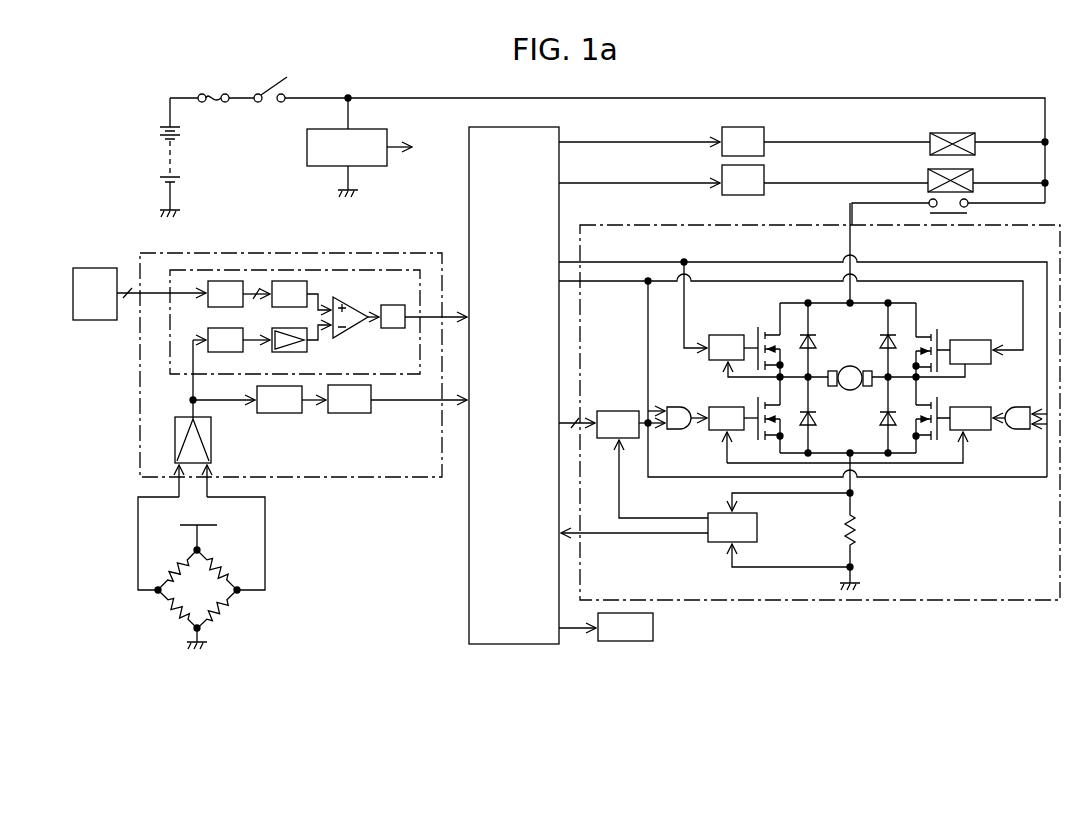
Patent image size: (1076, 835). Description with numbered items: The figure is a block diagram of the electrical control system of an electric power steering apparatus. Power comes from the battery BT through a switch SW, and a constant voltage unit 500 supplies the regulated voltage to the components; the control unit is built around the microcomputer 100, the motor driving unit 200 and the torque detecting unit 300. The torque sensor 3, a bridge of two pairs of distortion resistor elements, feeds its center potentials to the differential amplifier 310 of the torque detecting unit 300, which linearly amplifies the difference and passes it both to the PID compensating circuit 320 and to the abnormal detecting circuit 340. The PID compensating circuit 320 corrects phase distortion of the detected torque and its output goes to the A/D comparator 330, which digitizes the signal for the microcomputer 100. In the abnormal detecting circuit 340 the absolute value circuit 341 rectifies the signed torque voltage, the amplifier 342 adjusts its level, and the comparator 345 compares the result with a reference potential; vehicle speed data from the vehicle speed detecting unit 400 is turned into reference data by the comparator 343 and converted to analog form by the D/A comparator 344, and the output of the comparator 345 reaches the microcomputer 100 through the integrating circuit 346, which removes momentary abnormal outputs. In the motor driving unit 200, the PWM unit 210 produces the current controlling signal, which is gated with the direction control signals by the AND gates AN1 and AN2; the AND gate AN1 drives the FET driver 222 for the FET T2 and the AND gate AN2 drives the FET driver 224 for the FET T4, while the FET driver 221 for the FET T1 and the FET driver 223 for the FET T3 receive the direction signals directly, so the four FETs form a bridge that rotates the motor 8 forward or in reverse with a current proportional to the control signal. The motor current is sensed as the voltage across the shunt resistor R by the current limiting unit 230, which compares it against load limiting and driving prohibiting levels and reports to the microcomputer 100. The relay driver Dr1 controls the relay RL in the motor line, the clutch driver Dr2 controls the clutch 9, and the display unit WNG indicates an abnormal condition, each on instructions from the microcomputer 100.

The microcomputer (CPU) 100 is at (469, 546).
The motor driving unit 200 is at (811, 601).
The torque detecting unit 300 is at (346, 253).
The constant voltage unit / vehicle speed detecting unit 400 is at (79, 270).
The power supply circuit 500 is at (306, 147).
The torque sensor 3 is at (208, 598).
The motor 8 is at (849, 365).
The clutch 9 is at (949, 133).
The PWM unit 210 is at (635, 409).
The FET driver 221 is at (730, 334).
The FET driver 222 is at (977, 432).
The FET driver 223 is at (972, 340).
The FET driver 224 is at (712, 432).
The current limiting unit 230 is at (757, 536).
The differential amplifier 310 is at (212, 441).
The PID compensating circuit 320 is at (284, 414).
The A/D comparator 330 is at (356, 414).
The abnormal detecting circuit 340 is at (181, 376).
The absolute value circuit 341 is at (209, 328).
The amplifier 342 is at (300, 352).
The comparator 343 is at (233, 280).
The D/A comparator 344 is at (287, 280).
The comparator 345 is at (356, 333).
The integrating circuit 346 is at (388, 305).
The switch SW is at (267, 88).
The battery BT is at (183, 162).
The relay RL is at (974, 176).
The relay driver Dr1 is at (765, 180).
The clutch driver Dr2 is at (765, 133).
The FET T1 is at (757, 328).
The FET T2 is at (940, 400).
The FET T3 is at (942, 332).
The FET T4 is at (756, 400).
The AND gate AN1 is at (1018, 406).
The AND gate AN2 is at (673, 406).
The shunt resistor R is at (858, 530).
The display unit (abnormal display unit) WNG is at (657, 632).